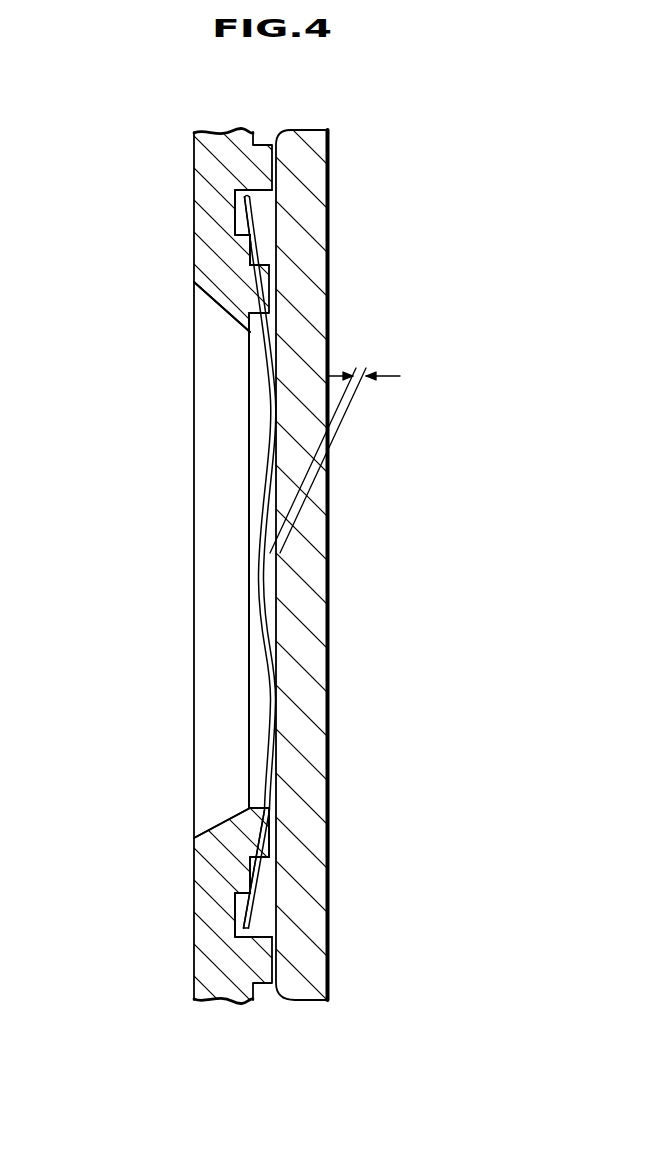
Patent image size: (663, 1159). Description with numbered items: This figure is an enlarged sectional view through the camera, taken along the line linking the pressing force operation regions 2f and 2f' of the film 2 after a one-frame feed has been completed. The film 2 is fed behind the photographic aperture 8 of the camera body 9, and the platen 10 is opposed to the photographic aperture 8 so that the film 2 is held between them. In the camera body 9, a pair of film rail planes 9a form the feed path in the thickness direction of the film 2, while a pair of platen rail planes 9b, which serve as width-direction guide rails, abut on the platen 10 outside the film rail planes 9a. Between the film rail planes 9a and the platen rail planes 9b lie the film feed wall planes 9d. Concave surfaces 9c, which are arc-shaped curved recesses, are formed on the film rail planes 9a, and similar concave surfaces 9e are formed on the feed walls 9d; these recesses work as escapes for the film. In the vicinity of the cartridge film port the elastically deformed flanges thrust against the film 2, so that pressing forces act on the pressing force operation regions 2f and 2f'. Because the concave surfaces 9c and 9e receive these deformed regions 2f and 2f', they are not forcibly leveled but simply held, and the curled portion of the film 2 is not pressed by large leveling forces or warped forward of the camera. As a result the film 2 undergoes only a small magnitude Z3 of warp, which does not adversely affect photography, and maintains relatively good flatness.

The film 2 is at (259, 592).
The pressing force operation region 2f is at (318, 221).
The pressing force operation region 2f' is at (318, 878).
The photographic aperture 8 is at (250, 795).
The camera body 9 is at (194, 181).
The film rail plane 9a is at (270, 848).
The platen rail plane 9b is at (268, 170).
The concave surface 9c is at (252, 300).
The film feed wall plane 9d is at (251, 259).
The concave surface 9e is at (235, 226).
The platen 10 is at (318, 181).
The magnitude of warp Z3 is at (335, 446).